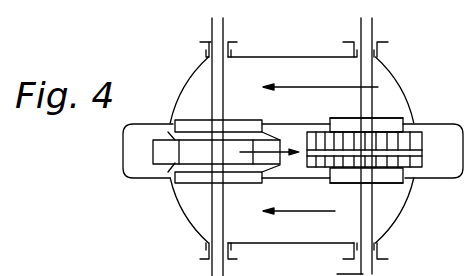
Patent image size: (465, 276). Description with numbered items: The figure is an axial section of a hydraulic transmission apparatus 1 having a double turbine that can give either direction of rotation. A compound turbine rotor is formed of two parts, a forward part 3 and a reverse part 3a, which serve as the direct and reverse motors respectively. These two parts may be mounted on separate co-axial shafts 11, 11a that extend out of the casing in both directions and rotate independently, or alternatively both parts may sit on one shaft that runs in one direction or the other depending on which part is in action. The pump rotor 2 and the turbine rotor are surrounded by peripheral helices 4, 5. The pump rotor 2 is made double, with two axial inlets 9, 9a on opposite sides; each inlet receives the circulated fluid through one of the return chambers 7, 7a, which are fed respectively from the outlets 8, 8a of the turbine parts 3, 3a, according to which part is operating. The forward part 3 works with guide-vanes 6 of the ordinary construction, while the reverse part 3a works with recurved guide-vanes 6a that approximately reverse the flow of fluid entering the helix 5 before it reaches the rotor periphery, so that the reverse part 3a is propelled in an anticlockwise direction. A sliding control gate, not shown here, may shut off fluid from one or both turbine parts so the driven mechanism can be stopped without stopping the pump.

The housing 1 is at (270, 124).
The pump rotor 2 is at (226, 152).
The forward part of the turbine rotor 3 is at (383, 183).
The reverse part of the turbine rotor 3a is at (390, 128).
The peripheral helix 4 is at (148, 151).
The peripheral helix 5 is at (433, 151).
The guide-vanes 6 is at (343, 160).
The guide-vanes 6a is at (353, 138).
The return chamber 7 is at (299, 222).
The return chamber 7a is at (314, 77).
The outlet 8 is at (356, 184).
The outlet 8a is at (382, 116).
The axial inlet 9 is at (202, 183).
The axial inlet 9a is at (207, 118).
The co-axial shaft 11 is at (366, 268).
The co-axial shaft 11a is at (362, 31).